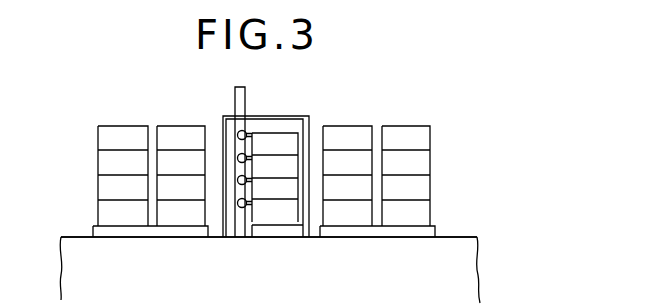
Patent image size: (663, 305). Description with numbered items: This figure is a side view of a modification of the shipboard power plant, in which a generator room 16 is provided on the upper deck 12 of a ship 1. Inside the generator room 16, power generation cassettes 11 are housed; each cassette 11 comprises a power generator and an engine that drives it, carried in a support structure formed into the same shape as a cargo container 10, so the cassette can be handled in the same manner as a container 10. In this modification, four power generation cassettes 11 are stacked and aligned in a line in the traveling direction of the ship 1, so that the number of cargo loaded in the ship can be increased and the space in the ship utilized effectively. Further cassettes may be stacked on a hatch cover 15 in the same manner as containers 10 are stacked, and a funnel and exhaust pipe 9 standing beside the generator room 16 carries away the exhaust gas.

The ship 1 is at (474, 232).
The upper deck 12 is at (455, 235).
The hatch cover 15 is at (437, 224).
The container 10 is at (354, 124).
The power generation cassette 11 is at (270, 142).
The generator room 16 is at (307, 117).
The funnel and exhaust pipe 9 is at (236, 92).